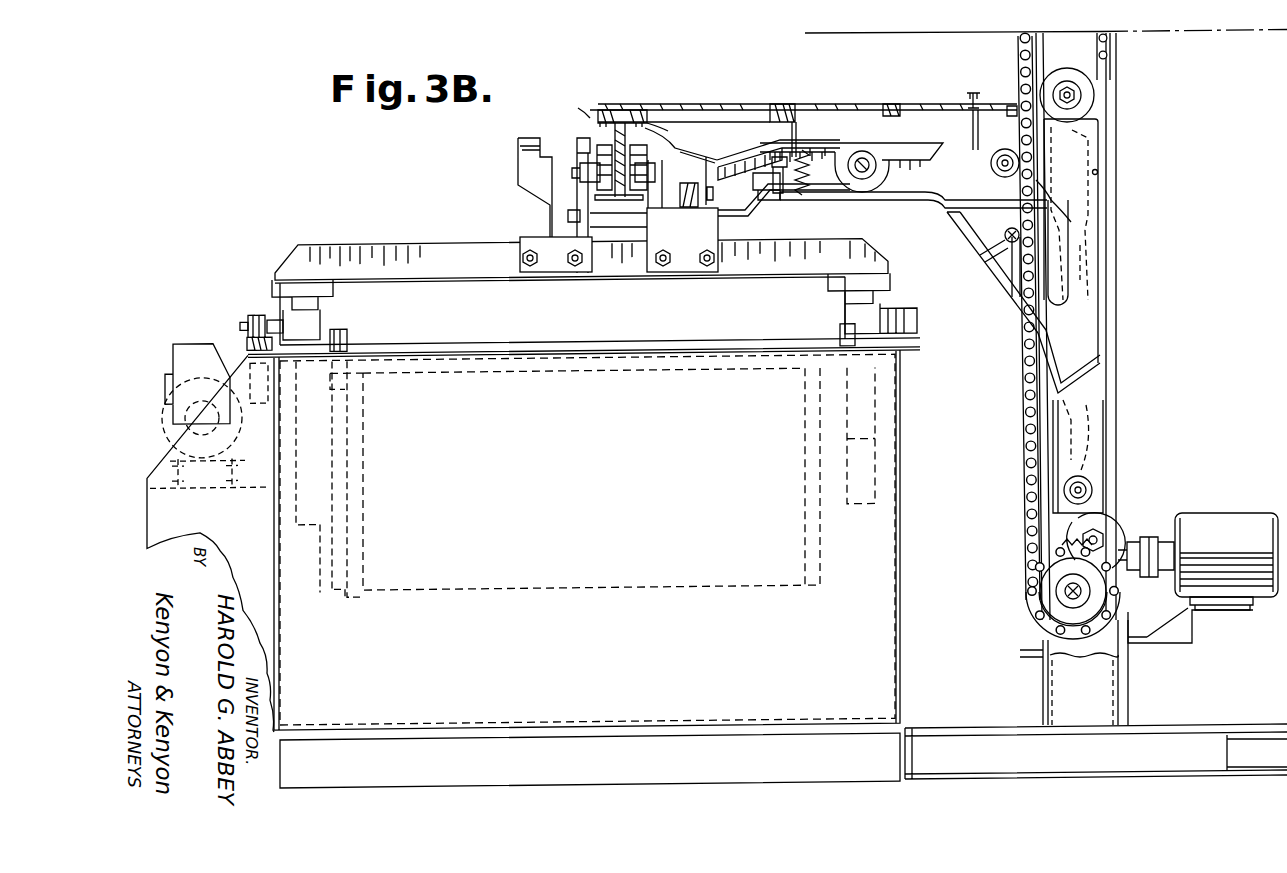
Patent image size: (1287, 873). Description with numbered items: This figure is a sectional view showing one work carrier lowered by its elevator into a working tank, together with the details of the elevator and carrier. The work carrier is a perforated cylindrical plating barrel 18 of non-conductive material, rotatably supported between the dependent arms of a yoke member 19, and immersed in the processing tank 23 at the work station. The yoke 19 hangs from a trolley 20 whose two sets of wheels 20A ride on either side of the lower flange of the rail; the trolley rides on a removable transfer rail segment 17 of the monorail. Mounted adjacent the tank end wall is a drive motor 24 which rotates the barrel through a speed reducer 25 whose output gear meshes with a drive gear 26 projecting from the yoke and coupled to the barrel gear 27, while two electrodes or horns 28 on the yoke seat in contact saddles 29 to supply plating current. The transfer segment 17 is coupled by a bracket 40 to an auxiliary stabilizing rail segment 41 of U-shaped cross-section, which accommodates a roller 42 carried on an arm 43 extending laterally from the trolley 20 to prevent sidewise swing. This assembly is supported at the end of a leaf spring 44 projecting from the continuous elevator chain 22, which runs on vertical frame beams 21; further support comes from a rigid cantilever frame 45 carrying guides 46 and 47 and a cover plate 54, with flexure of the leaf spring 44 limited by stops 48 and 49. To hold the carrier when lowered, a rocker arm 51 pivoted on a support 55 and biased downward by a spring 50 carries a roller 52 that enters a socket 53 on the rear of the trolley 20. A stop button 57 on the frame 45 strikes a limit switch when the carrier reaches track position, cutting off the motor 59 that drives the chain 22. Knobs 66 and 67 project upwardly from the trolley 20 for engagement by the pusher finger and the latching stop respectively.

The transfer rail segment 17 is at (626, 123).
The plating barrel 18 is at (570, 593).
The yoke member 19 is at (365, 245).
The trolley 20 is at (553, 218).
The wheels 20A is at (596, 115).
The vertical frame beams 21 is at (1048, 45).
The continuous chain 22 is at (1021, 384).
The processing tank 23 is at (886, 610).
The drive motor 24 is at (166, 430).
The speed reducer 25 is at (183, 343).
The drive gear 26 is at (250, 365).
The barrel gear 27 is at (345, 598).
The electrodes or horns 28 is at (242, 324).
The contact saddles 29 is at (257, 315).
The bracket 40 is at (733, 104).
The auxiliary stabilizing rail segment 41 is at (745, 212).
The roller 42 is at (778, 200).
The arm 43 is at (722, 235).
The leaf spring 44 is at (905, 210).
The cantilever frame 45 is at (993, 292).
The guide 46 is at (1095, 95).
The guide 47 is at (1115, 530).
The stop 48 is at (998, 157).
The stop 49 is at (1003, 237).
The spring 50 is at (805, 195).
The rocker arm 51 is at (838, 143).
The roller 52 is at (743, 155).
The socket 53 is at (686, 160).
The cover plate 54 is at (787, 104).
The support 55 is at (866, 152).
The stop button 57 is at (968, 92).
The motor 59 is at (1225, 515).
The knob 66 is at (518, 140).
The knob 67 is at (578, 138).